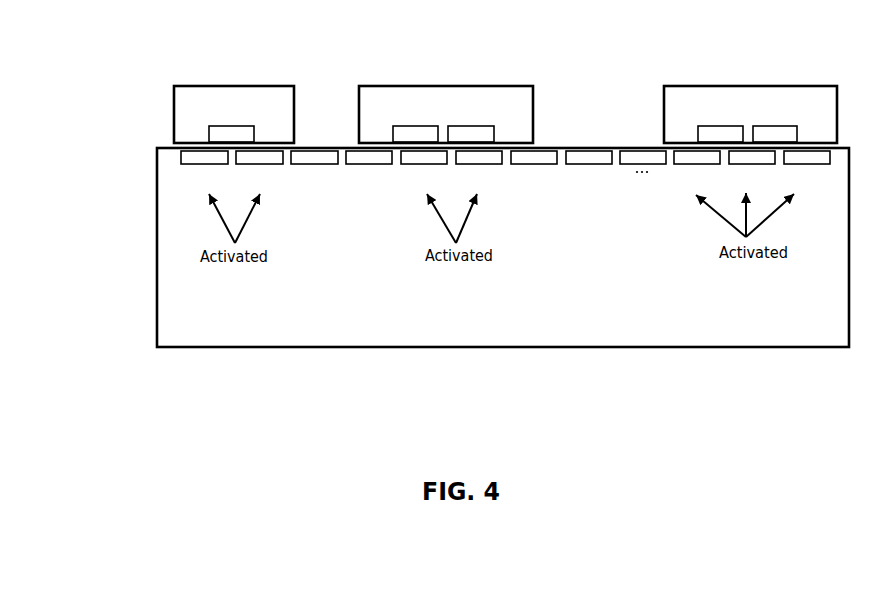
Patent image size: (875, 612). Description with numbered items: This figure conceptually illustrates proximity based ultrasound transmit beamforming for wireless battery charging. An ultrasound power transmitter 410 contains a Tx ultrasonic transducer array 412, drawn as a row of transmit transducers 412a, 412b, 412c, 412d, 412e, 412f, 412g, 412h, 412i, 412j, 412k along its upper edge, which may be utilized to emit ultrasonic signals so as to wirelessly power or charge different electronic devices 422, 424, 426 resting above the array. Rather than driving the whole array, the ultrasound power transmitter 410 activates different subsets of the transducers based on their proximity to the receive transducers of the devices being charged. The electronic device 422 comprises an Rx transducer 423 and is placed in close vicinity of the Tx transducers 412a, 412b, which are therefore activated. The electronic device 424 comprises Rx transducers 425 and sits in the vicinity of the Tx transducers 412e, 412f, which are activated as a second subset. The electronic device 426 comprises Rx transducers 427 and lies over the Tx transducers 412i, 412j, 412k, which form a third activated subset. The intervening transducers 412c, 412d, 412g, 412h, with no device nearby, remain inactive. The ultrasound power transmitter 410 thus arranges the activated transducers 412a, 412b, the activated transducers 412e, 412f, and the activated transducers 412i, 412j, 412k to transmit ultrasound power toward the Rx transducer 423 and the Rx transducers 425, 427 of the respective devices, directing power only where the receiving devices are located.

The ultrasound power transmitter 410 is at (156, 243).
The Tx ultrasonic transducer array 412 is at (471, 157).
The Tx transducer 412a is at (204, 169).
The Tx transducer 412b is at (259, 169).
The Tx transducer 412c is at (314, 169).
The Tx transducer 412d is at (369, 169).
The Tx transducer 412e is at (424, 169).
The Tx transducer 412f is at (479, 169).
The Tx transducer 412g is at (534, 169).
The Tx transducer 412h is at (589, 169).
The Tx transducer 412i is at (697, 169).
The Tx transducer 412j is at (752, 169).
The Tx transducer 412k is at (807, 169).
The electronic device 422 is at (216, 100).
The Rx transducer 423 is at (234, 116).
The electronic device 424 is at (427, 99).
The Rx transducers 425 is at (443, 116).
The electronic device 426 is at (731, 101).
The Rx transducers 427 is at (750, 117).